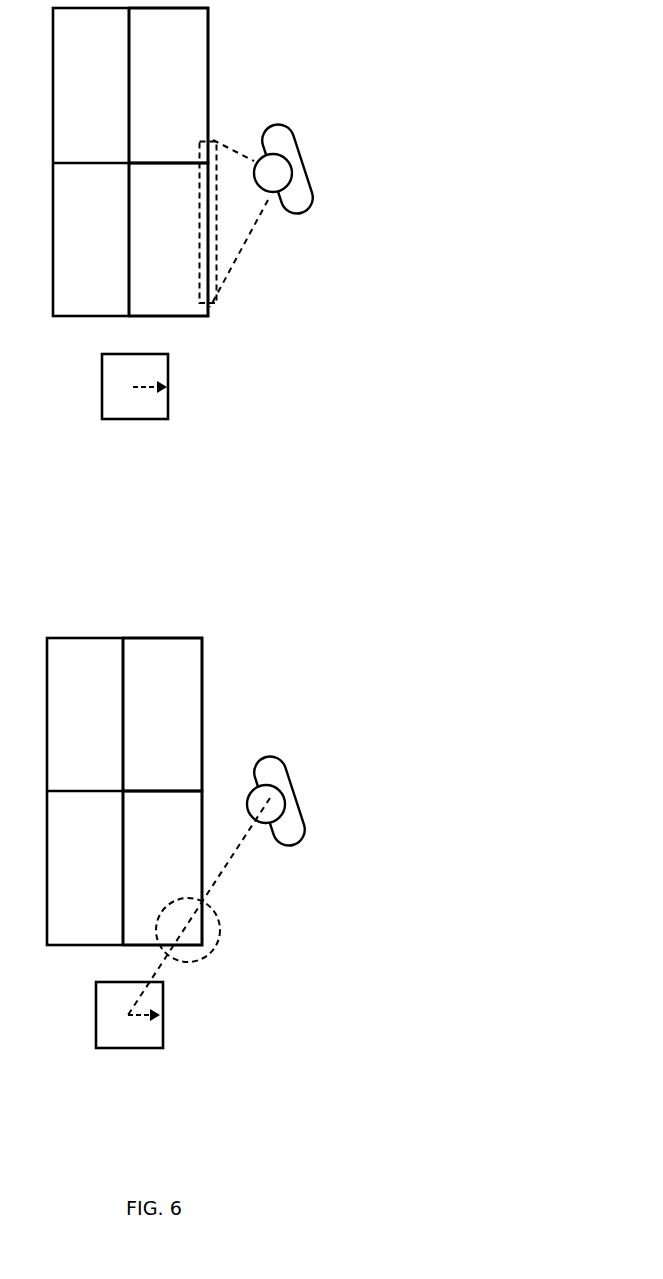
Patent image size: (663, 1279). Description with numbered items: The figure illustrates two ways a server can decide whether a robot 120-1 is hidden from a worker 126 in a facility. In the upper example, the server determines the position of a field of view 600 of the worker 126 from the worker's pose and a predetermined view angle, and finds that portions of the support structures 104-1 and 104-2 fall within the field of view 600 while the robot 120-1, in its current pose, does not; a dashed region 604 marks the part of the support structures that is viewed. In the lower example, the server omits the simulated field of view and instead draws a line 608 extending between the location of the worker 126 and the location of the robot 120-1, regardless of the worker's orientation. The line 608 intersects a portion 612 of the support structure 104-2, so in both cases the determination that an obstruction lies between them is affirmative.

The support structure 104-1 is at (197, 99).
The support structure 104-2 is at (197, 254).
The worker 126 is at (278, 126).
The field of view 600 is at (245, 243).
The viewed display portion 604 is at (213, 260).
The robot 120-1 is at (116, 428).
The line 608 is at (238, 858).
The portion of the support structure 612 is at (218, 932).